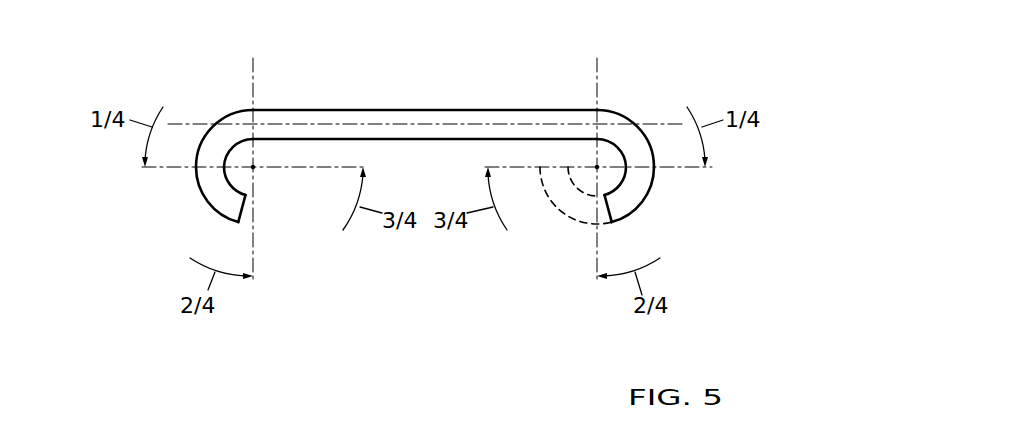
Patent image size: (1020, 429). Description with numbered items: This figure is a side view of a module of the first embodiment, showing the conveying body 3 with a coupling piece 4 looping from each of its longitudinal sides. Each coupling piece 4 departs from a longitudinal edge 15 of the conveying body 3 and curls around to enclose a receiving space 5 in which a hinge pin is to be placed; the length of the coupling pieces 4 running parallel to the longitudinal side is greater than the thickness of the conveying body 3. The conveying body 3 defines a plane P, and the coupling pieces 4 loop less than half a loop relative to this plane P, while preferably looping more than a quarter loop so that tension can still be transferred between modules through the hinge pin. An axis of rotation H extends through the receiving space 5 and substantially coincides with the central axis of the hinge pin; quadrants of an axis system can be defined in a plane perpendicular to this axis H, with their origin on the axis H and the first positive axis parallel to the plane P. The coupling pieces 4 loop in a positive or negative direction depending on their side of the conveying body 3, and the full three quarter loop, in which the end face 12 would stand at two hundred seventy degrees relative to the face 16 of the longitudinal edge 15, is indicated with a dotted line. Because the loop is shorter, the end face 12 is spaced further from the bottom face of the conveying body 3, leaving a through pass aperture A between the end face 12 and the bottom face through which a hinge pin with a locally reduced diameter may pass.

The conveying body 3 is at (425, 112).
The coupling pieces 4 is at (212, 180).
The receiving space 5 is at (243, 178).
The end face 12 is at (243, 212).
The longitudinal edge 15 is at (248, 102).
The face 16 is at (252, 112).
The plane P is at (327, 124).
The axis of rotation H is at (597, 167).
The through pass aperture A is at (523, 92).